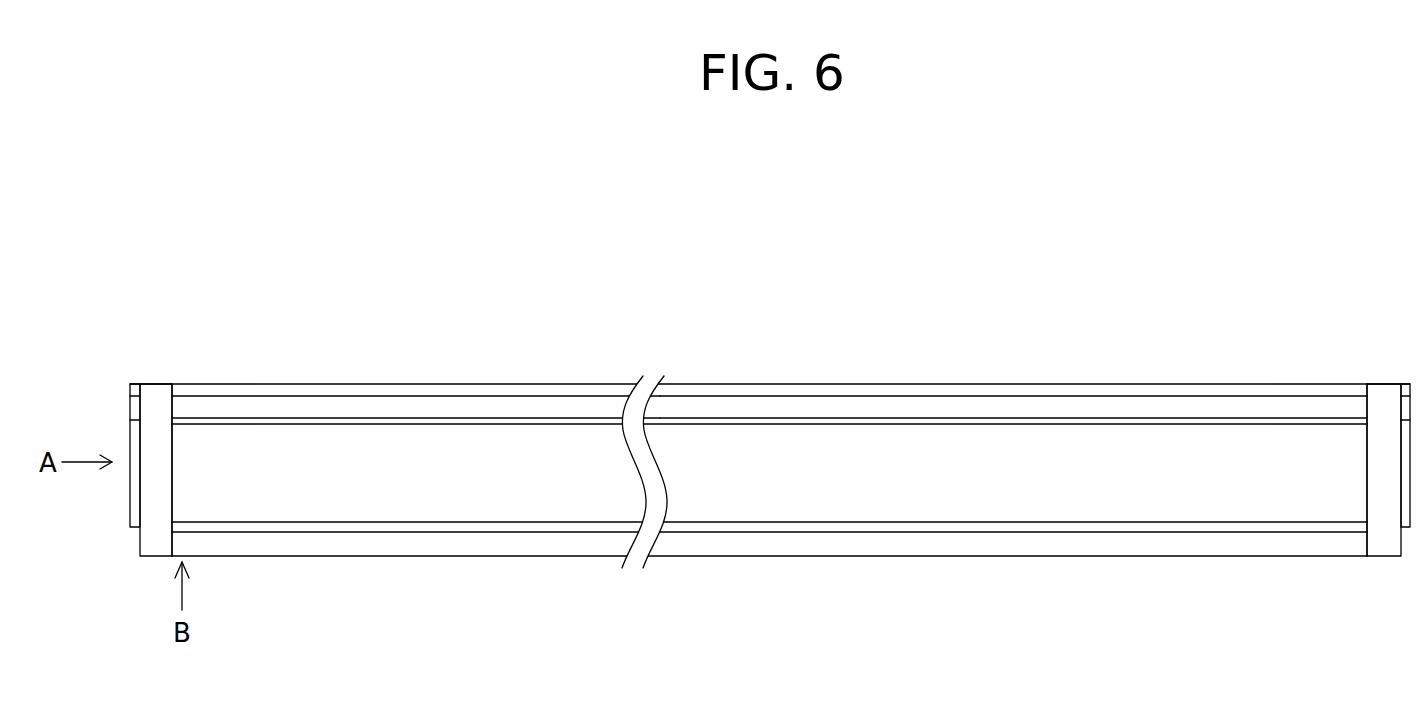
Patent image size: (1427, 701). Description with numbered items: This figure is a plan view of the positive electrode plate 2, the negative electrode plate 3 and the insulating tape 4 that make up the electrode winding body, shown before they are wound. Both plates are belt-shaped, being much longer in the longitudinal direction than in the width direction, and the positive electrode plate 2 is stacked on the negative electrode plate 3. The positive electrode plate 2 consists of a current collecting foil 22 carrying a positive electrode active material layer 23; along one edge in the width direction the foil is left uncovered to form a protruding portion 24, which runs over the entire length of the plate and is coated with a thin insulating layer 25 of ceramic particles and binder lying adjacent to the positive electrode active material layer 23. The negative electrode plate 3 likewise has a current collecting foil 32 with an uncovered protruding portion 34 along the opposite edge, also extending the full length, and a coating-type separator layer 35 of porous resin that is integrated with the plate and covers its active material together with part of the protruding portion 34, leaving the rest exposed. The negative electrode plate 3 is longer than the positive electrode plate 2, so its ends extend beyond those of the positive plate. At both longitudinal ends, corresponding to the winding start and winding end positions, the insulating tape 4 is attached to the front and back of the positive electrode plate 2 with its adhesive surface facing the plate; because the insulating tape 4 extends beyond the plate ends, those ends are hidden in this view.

The positive electrode plate 2 is at (475, 560).
The negative electrode plate 3 is at (358, 377).
The insulating tape 4 is at (154, 398).
The protruding portion 34 is at (769, 353).
The current collecting foil 32 is at (497, 388).
The separator layer 35 is at (1142, 405).
The positive electrode active material layer 23 is at (768, 497).
The protruding portion 24 is at (769, 587).
The current collecting foil 22 is at (967, 545).
The insulating layer 25 is at (1152, 525).